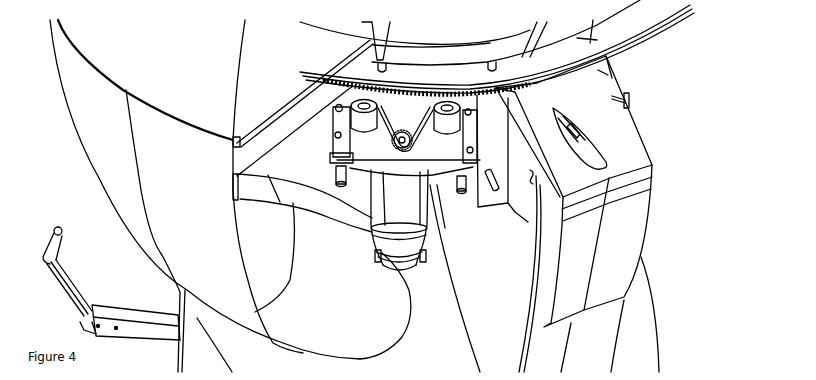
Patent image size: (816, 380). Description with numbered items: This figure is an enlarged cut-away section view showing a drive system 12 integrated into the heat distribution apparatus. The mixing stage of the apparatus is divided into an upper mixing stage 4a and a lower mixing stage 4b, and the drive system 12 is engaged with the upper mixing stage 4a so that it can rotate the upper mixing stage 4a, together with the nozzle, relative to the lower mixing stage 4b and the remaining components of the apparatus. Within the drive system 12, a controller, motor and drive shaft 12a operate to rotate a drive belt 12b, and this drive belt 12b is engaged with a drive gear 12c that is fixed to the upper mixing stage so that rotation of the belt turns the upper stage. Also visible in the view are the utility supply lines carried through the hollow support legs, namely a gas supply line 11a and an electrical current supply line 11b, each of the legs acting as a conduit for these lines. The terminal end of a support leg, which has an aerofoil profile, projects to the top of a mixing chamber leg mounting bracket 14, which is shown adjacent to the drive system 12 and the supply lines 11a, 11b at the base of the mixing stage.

The upper mixing stage 4a is at (130, 41).
The lower mixing stage 4b is at (105, 155).
The drive system 12 is at (347, 194).
The drive shaft 12a is at (409, 212).
The drive belt 12b is at (360, 133).
The drive gear 12c is at (345, 83).
The gas supply line 11a is at (580, 131).
The electrical current supply line 11b is at (629, 97).
The mixing chamber leg mounting bracket 14 is at (629, 235).